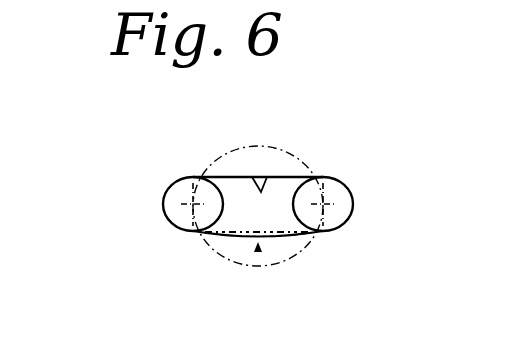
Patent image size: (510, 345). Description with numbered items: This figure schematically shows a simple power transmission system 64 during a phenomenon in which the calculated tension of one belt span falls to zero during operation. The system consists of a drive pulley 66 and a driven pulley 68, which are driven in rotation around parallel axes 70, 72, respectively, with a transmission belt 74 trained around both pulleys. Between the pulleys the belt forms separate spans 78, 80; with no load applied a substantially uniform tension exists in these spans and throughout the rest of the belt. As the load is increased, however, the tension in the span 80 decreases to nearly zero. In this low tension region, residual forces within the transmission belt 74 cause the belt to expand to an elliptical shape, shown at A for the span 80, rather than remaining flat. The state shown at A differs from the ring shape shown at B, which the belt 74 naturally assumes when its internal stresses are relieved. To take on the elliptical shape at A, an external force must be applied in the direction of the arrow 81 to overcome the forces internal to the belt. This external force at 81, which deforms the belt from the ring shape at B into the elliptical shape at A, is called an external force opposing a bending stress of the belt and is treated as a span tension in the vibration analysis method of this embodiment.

The power transmission system 64 is at (173, 228).
The drive pulley 66 is at (344, 178).
The driven pulley 68 is at (167, 172).
The axis 70 is at (363, 198).
The axis 72 is at (135, 185).
The transmission belt 74 is at (274, 179).
The span 78 is at (229, 151).
The span 80 is at (258, 280).
The arrow 81 is at (275, 288).
The elliptical shape A is at (324, 274).
The ring shape B is at (290, 263).